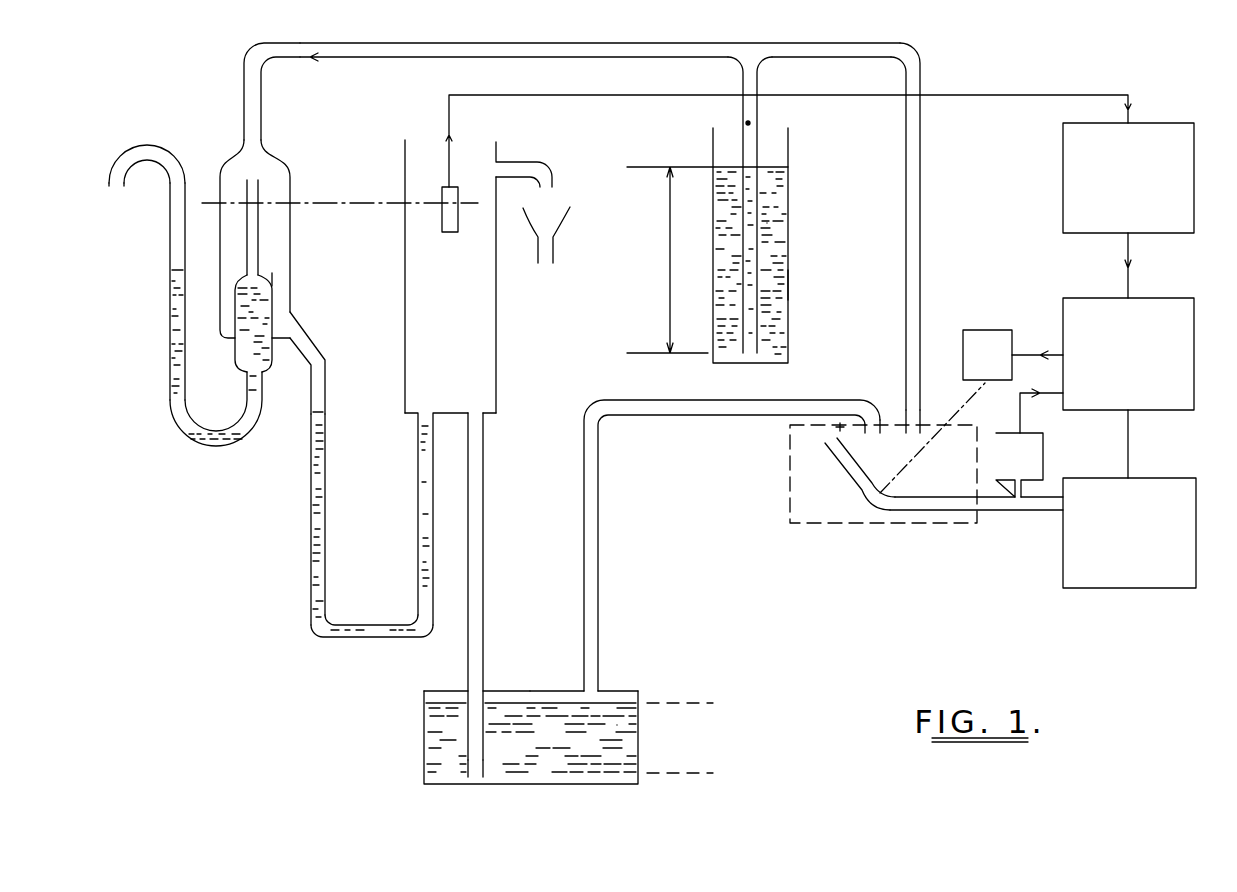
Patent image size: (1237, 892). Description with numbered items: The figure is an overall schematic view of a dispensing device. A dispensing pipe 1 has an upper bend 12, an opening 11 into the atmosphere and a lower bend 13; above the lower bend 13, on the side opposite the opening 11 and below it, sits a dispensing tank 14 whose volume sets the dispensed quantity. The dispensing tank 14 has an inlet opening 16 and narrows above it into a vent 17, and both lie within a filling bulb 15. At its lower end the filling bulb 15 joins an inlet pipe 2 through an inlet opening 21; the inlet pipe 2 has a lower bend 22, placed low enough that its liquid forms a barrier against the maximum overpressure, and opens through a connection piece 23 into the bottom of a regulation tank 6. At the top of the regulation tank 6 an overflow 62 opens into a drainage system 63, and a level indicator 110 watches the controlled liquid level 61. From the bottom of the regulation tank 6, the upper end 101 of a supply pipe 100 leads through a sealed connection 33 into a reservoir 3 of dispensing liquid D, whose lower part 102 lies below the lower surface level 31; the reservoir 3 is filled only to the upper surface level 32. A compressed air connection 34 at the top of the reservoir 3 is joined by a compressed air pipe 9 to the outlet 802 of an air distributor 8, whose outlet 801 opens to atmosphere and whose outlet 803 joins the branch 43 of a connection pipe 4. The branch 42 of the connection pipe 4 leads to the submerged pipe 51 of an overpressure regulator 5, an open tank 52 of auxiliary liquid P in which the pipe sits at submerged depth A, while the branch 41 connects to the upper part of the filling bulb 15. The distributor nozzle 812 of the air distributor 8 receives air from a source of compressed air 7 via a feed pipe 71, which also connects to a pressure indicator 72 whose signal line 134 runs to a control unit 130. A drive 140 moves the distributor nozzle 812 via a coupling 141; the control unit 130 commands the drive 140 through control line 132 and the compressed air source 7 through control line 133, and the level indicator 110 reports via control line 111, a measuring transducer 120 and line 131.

The dispensing pipe 1 is at (170, 333).
The opening 11 is at (123, 192).
The bend 12 is at (147, 152).
The bend 13 is at (216, 419).
The dispensing tank 14 is at (235, 354).
The filling bulb 15 is at (291, 182).
The inlet opening 16 is at (270, 266).
The vent 17 is at (243, 219).
The inlet pipe 2 is at (311, 522).
The inlet opening 21 is at (308, 362).
The bend 22 is at (372, 613).
The connection piece 23 is at (429, 518).
The reservoir 3 is at (424, 748).
The lower surface level 31 is at (693, 773).
The upper surface level 32 is at (693, 703).
The sealed connection 33 is at (477, 682).
The compressed air connection 34 is at (584, 682).
The connection pipe 4 is at (612, 58).
The branch 41 is at (272, 91).
The branch 42 is at (758, 205).
The branch 43 is at (920, 226).
The overpressure regulator 5 is at (735, 245).
The submerged pipe 51 is at (746, 123).
The open tank 52 is at (788, 283).
The regulation tank 6 is at (500, 334).
The controlled liquid level 61 is at (340, 194).
The overflow 62 is at (524, 164).
The drainage system 63 is at (553, 235).
The source of compressed air 7 is at (1129, 533).
The feed pipe 71 is at (976, 494).
The pressure indicator 72 is at (1019, 465).
The air distributor 8 is at (790, 498).
The outlet 801 is at (832, 423).
The outlet 802 is at (870, 437).
The outlet 803 is at (897, 410).
The distributor nozzle 812 is at (853, 474).
The compressed air pipe 9 is at (705, 415).
The supply pipe 100 is at (483, 598).
The upper end 101 is at (501, 423).
The lower part 102 is at (475, 771).
The level indicator 110 is at (440, 221).
The control line 111 is at (788, 132).
The measuring transducer 120 is at (1128, 178).
The control unit 130 is at (1128, 354).
The line 131 is at (1146, 265).
The control line 132 is at (1037, 345).
The control line 133 is at (1147, 444).
The signal line 134 is at (1040, 411).
The drive 140 is at (987, 355).
The coupling 141 is at (932, 438).
The auxiliary liquid P is at (774, 218).
The submerged depth A is at (707, 260).
The dispensing liquid D is at (624, 729).